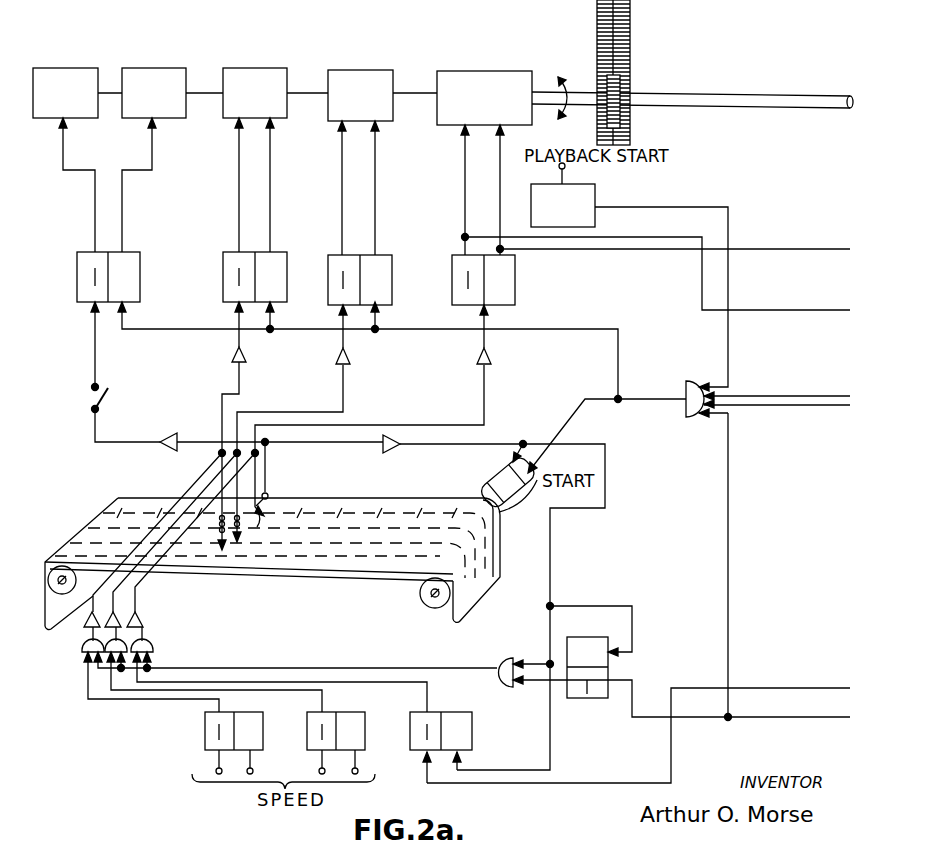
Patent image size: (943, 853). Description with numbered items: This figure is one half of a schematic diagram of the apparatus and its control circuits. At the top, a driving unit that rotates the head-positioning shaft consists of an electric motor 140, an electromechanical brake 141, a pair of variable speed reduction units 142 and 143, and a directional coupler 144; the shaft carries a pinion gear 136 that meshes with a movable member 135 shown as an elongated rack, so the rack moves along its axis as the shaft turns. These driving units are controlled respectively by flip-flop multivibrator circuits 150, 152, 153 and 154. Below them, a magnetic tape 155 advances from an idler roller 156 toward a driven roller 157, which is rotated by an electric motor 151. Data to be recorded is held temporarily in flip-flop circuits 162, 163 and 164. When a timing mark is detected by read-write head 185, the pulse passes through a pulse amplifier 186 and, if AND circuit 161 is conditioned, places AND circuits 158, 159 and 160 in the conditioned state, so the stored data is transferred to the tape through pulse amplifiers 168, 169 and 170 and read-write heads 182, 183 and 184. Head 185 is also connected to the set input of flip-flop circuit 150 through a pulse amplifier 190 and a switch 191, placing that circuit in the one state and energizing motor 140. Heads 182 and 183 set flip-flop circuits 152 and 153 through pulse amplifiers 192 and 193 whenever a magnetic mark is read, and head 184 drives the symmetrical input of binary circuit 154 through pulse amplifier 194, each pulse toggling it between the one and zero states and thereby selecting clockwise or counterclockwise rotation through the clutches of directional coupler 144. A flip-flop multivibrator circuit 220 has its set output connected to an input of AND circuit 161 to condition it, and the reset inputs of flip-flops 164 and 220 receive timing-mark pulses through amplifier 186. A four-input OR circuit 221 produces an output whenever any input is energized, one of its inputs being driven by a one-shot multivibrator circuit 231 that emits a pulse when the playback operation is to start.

The movable member 135 is at (630, 26).
The pinion gear 136 is at (621, 90).
The electric motor 140 is at (71, 67).
The electromechanical brake 141 is at (153, 67).
The variable speed reduction unit 142 is at (261, 67).
The variable speed reduction unit 143 is at (362, 69).
The directional coupler 144 is at (477, 70).
The flip-flop multivibrator circuit 150 is at (77, 278).
The electric motor 151 is at (512, 502).
The flip-flop multivibrator circuit 152 is at (223, 278).
The flip-flop multivibrator circuit 153 is at (328, 281).
The binary multivibrator circuit 154 is at (452, 285).
The magnetic tape 155 is at (331, 581).
The idler roller 156 is at (53, 557).
The driven roller 157 is at (426, 599).
The AND circuit 158 is at (82, 650).
The AND circuit 159 is at (128, 645).
The AND circuit 160 is at (152, 648).
The AND circuit 161 is at (498, 663).
The flip-flop circuit 162 is at (205, 735).
The flip-flop circuit 163 is at (307, 738).
The flip-flop circuit 164 is at (410, 738).
The pulse amplifier 168 is at (88, 621).
The pulse amplifier 169 is at (118, 609).
The pulse amplifier 170 is at (143, 619).
The read-write head 182 is at (227, 556).
The read-write head 183 is at (247, 550).
The read-write head 184 is at (256, 524).
The read-write head 185 is at (270, 494).
The pulse amplifier 186 is at (386, 454).
The pulse amplifier 190 is at (176, 428).
The switch 191 is at (108, 389).
The pulse amplifier 192 is at (246, 354).
The pulse amplifier 193 is at (350, 356).
The pulse amplifier 194 is at (491, 356).
The flip-flop multivibrator circuit 220 is at (600, 699).
The four-input OR circuit 221 is at (696, 381).
The one-shot multivibrator circuit 231 is at (591, 195).